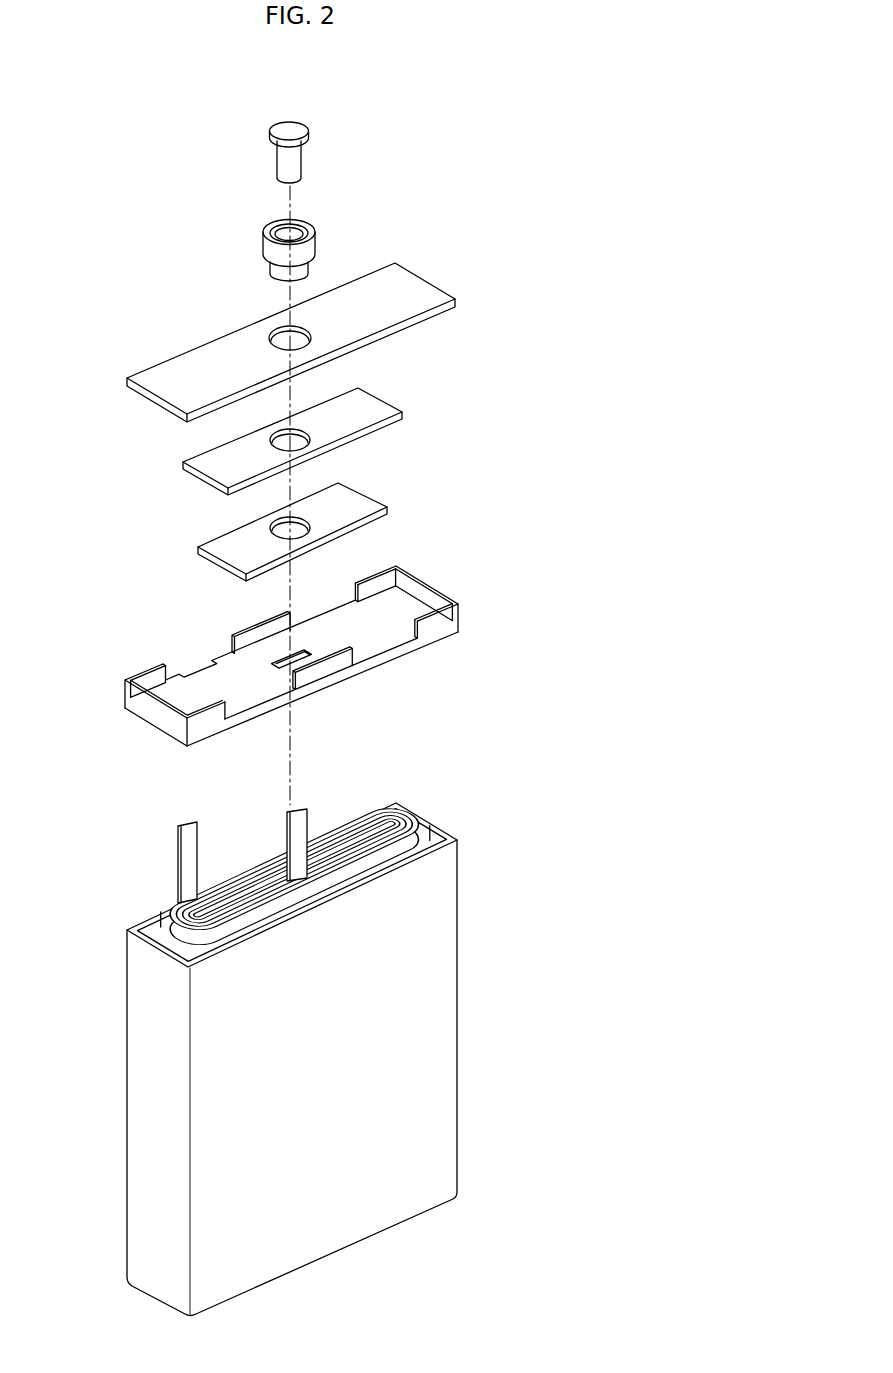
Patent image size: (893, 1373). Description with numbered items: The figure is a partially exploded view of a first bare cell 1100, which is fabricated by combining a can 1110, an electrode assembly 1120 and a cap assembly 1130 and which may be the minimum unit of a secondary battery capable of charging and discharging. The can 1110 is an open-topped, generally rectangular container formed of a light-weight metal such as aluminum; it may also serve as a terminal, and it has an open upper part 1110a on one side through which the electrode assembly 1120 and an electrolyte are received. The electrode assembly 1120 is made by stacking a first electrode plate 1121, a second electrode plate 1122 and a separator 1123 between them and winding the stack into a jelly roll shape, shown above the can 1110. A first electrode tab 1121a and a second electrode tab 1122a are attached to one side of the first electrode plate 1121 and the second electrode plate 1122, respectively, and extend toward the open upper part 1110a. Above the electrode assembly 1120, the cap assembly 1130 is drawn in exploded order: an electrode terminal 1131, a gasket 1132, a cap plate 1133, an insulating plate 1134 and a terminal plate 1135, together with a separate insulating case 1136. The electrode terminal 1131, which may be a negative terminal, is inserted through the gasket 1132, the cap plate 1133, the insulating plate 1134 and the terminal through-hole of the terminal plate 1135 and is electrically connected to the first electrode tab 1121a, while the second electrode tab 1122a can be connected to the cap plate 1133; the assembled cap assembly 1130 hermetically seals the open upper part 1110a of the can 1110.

The first bare cell 1100 is at (88, 92).
The can 1110 is at (473, 978).
The open upper part 1110a is at (453, 842).
The electrode assembly 1120 is at (337, 797).
The first electrode plate 1121 is at (423, 825).
The second electrode plate 1122 is at (400, 808).
The separator 1123 is at (412, 812).
The first electrode tab 1121a is at (187, 848).
The second electrode tab 1122a is at (295, 828).
The cap assembly 1130 is at (459, 232).
The electrode terminal 1131 is at (283, 128).
The gasket 1132 is at (264, 227).
The cap plate 1133 is at (172, 368).
The insulating plate 1134 is at (372, 405).
The terminal plate 1135 is at (365, 498).
The insulating case 1136 is at (152, 717).